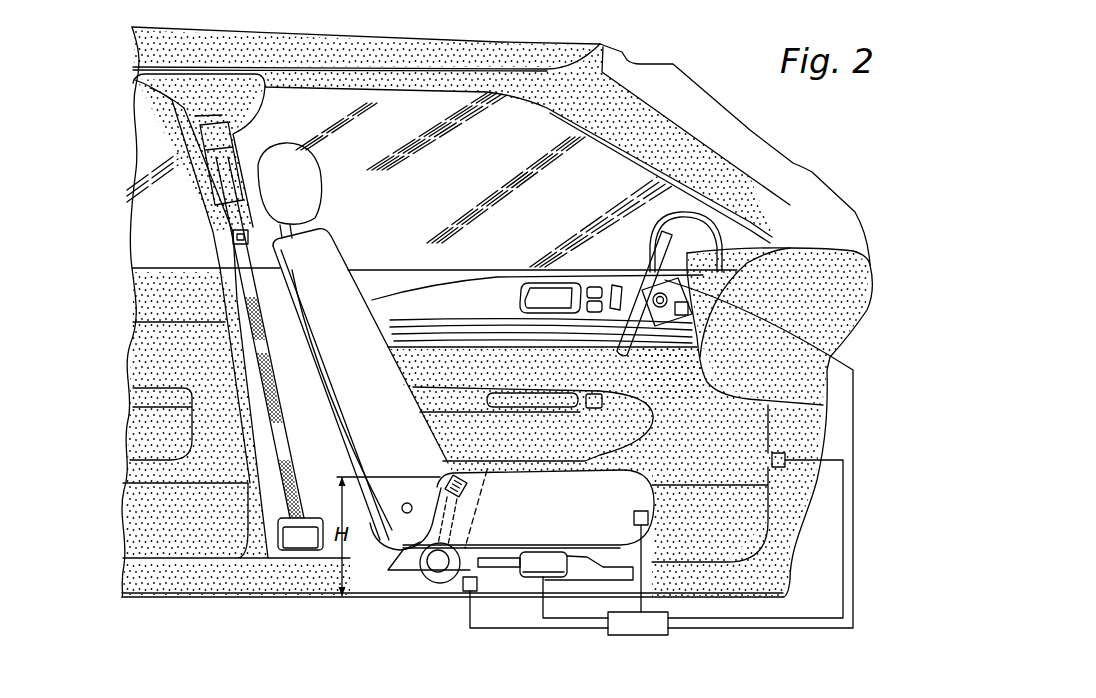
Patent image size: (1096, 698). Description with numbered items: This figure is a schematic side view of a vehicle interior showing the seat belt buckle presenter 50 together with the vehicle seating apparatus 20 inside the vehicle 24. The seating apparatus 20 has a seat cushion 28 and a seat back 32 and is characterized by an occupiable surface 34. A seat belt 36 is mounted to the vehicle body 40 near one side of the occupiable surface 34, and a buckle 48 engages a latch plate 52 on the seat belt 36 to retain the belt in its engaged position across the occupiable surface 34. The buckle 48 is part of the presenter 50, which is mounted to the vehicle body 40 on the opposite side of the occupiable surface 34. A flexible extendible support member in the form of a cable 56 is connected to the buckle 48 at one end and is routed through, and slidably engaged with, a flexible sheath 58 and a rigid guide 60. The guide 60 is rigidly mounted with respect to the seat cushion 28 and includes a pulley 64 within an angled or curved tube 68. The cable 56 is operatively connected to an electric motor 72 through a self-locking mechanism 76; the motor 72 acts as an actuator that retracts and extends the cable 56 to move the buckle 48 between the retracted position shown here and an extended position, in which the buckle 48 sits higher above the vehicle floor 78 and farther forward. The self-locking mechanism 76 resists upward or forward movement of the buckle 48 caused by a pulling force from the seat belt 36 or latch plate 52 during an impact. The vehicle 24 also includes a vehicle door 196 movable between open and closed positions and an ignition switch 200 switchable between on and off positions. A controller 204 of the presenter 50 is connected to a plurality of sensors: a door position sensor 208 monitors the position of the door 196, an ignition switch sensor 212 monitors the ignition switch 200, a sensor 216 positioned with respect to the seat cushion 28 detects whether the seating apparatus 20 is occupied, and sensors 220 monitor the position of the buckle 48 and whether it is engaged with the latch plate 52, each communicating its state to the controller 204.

The vehicle seating apparatus 20 is at (337, 200).
The vehicle 24 is at (163, 129).
The seat cushion 28 is at (620, 490).
The seat back 32 is at (307, 253).
The occupiable surface 34 is at (371, 299).
The seat belt 36 is at (245, 283).
The vehicle body 40 is at (623, 115).
The buckle 48 is at (462, 463).
The seat belt buckle presenter 50 is at (447, 591).
The latch plate 52 is at (232, 240).
The cable 56 is at (490, 548).
The flexible sheath 58 is at (460, 575).
The rigid guide 60 is at (405, 503).
The pulley 64 is at (437, 568).
The angled or curved tube 68 is at (448, 483).
The electric motor 72 is at (540, 556).
The self-locking mechanism 76 is at (500, 553).
The vehicle floor 78 is at (210, 597).
The vehicle door 196 is at (745, 425).
The ignition switch 200 is at (664, 292).
The controller 204 is at (653, 633).
The door position sensor 208 is at (787, 455).
The ignition switch sensor 212 is at (835, 250).
The sensor 216 is at (650, 517).
The sensors 220 is at (473, 593).